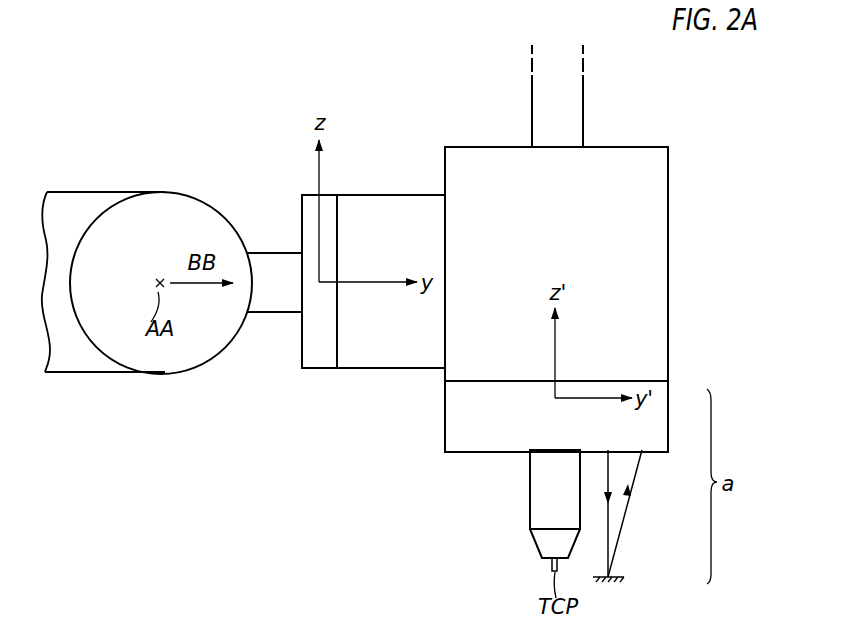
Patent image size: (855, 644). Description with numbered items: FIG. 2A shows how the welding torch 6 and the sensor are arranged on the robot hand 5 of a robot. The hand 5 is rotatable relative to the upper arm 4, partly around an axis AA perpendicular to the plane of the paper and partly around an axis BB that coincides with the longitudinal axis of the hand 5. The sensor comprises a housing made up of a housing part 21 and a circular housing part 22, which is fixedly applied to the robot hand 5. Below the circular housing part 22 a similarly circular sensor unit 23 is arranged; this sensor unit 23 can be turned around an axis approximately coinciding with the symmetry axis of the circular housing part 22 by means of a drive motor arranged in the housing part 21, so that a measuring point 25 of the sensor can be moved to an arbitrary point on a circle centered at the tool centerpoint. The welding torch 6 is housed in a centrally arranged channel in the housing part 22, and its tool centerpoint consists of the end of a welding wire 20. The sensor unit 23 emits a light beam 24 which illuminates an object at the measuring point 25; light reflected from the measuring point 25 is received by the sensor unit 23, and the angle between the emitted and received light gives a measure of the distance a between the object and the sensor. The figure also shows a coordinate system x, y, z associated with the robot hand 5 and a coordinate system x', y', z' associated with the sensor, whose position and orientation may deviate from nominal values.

The upper arm 4 is at (73, 200).
The robot hand 5 is at (321, 357).
The welding torch 6 is at (578, 112).
The welding wire 20 is at (548, 566).
The housing part 21 is at (388, 206).
The circular housing part 22 is at (652, 225).
The sensor unit 23 is at (657, 422).
The light beam 24 is at (620, 473).
The measuring point 25 is at (614, 575).